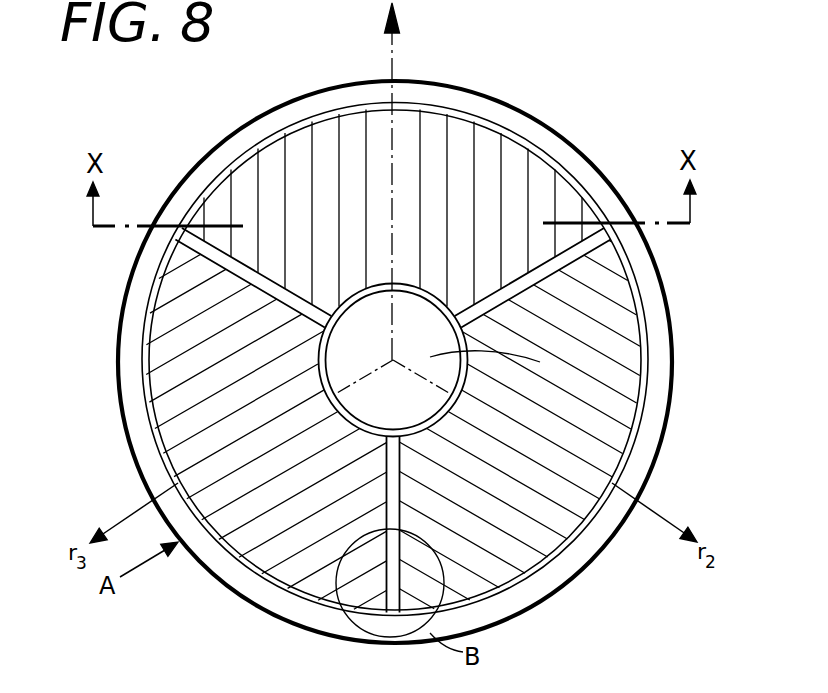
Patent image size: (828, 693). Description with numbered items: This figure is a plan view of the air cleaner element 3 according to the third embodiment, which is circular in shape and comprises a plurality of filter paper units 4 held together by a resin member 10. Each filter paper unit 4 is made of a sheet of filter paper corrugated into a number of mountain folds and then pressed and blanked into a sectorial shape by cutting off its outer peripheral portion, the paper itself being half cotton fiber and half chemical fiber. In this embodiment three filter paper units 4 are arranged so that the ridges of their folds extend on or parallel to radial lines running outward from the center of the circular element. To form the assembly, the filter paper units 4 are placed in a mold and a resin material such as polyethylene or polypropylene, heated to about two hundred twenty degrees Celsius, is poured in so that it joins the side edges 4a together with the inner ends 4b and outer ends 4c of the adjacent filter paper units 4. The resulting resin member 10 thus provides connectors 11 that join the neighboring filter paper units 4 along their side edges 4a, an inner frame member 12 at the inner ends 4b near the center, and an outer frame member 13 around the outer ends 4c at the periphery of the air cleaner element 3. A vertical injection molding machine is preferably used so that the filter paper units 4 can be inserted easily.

The air cleaner element 3 is at (521, 78).
The filter paper unit 4 is at (463, 187).
The side edge 4a is at (237, 270).
The inner end 4b is at (336, 370).
The outer end 4c is at (221, 536).
The resin member 10 is at (401, 66).
The connector 11 is at (287, 292).
The inner frame member 12 is at (640, 408).
The outer frame member 13 is at (653, 317).